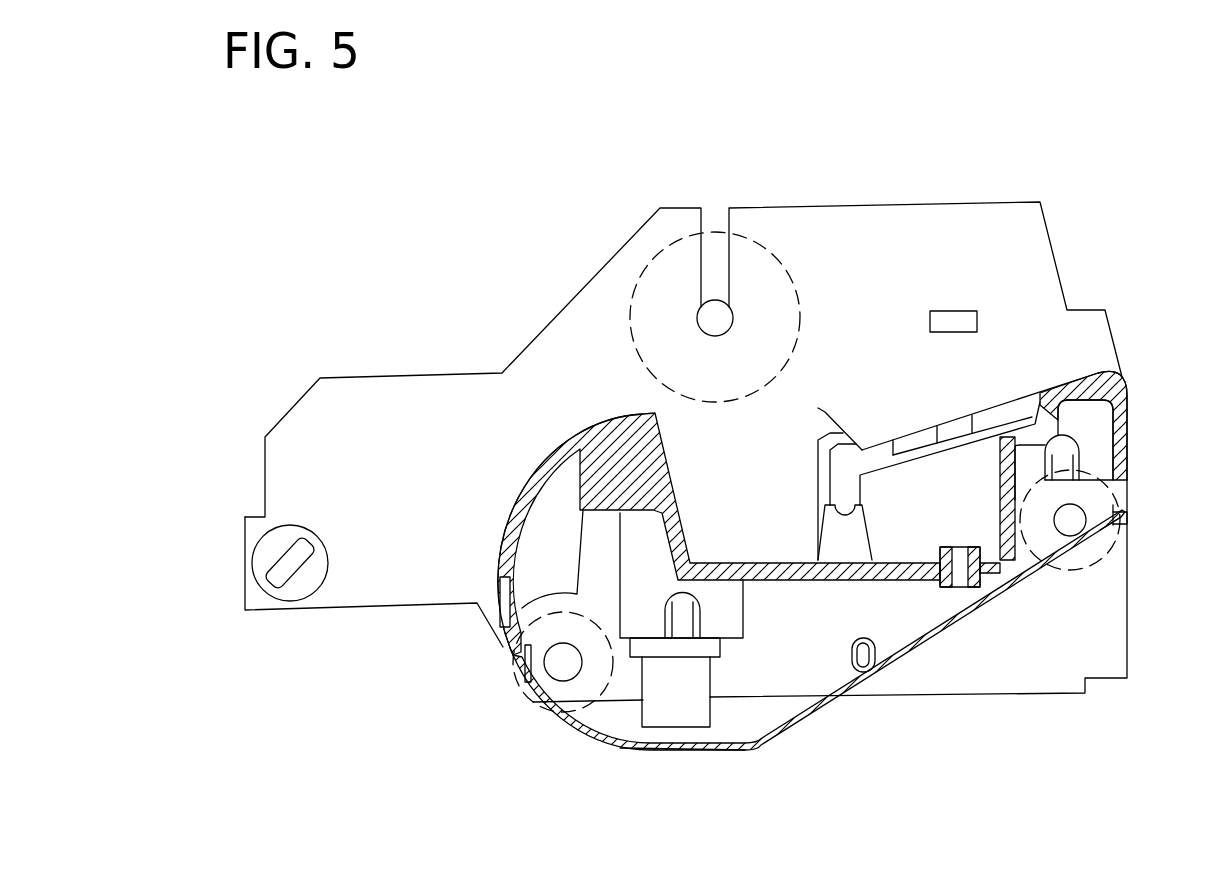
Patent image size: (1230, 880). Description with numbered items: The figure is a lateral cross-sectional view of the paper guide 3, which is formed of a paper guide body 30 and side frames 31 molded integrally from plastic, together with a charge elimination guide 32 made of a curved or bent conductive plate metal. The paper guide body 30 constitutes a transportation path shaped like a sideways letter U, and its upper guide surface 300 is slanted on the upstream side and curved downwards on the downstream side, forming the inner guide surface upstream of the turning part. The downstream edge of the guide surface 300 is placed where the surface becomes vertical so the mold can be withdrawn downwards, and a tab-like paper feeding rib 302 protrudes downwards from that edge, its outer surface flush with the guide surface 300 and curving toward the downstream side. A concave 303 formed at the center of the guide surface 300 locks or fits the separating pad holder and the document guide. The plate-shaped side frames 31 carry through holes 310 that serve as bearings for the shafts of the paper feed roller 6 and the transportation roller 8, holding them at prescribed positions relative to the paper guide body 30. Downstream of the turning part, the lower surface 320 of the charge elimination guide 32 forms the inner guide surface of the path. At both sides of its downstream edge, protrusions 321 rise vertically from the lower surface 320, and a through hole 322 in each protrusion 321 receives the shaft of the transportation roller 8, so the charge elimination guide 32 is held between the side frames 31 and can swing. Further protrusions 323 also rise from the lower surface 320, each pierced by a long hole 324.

The paper guide 3 is at (340, 715).
The paper feed roller 6 is at (645, 268).
The transportation roller 8 is at (1113, 487).
The paper guide body 30 is at (495, 515).
The side frame 31 is at (978, 188).
The charge elimination guide 32 is at (790, 747).
The guide surface 300 is at (550, 459).
The paper feeding rib 302 is at (510, 655).
The concave 303 is at (818, 408).
The through hole 310 is at (733, 318).
The lower surface 320 is at (700, 757).
The protrusion 321 is at (1120, 527).
The through hole 322 is at (1118, 518).
The protrusion 323 is at (850, 667).
The long hole 324 is at (863, 637).